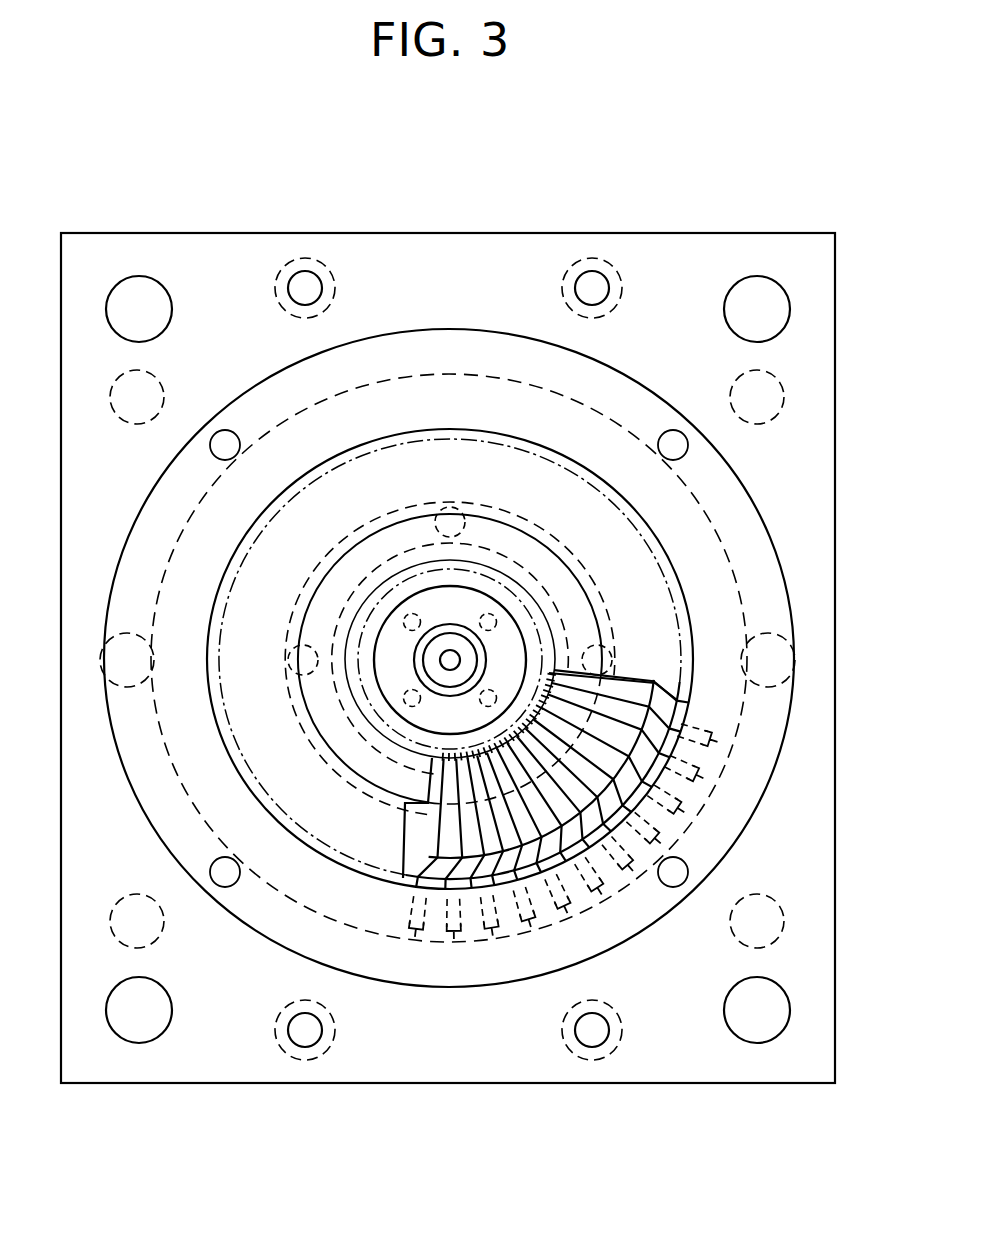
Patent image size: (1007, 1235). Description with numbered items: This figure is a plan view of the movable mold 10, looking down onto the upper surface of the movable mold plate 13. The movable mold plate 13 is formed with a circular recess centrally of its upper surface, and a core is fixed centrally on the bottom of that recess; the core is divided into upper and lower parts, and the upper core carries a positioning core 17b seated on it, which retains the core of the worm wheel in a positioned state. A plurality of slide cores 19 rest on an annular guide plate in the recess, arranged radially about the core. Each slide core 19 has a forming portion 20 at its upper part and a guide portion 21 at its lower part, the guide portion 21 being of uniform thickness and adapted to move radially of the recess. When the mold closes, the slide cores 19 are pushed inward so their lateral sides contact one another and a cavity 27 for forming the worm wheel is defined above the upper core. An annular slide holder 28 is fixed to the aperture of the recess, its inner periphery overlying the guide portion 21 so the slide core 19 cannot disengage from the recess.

The movable mold 10 is at (80, 232).
The movable mold plate 13 is at (176, 262).
The slide holder 28 is at (437, 348).
The positioning core 17b is at (490, 535).
The cavity 27 is at (520, 617).
The slide core 19 is at (627, 674).
The forming portion 20 is at (553, 822).
The guide portion 21 is at (487, 940).